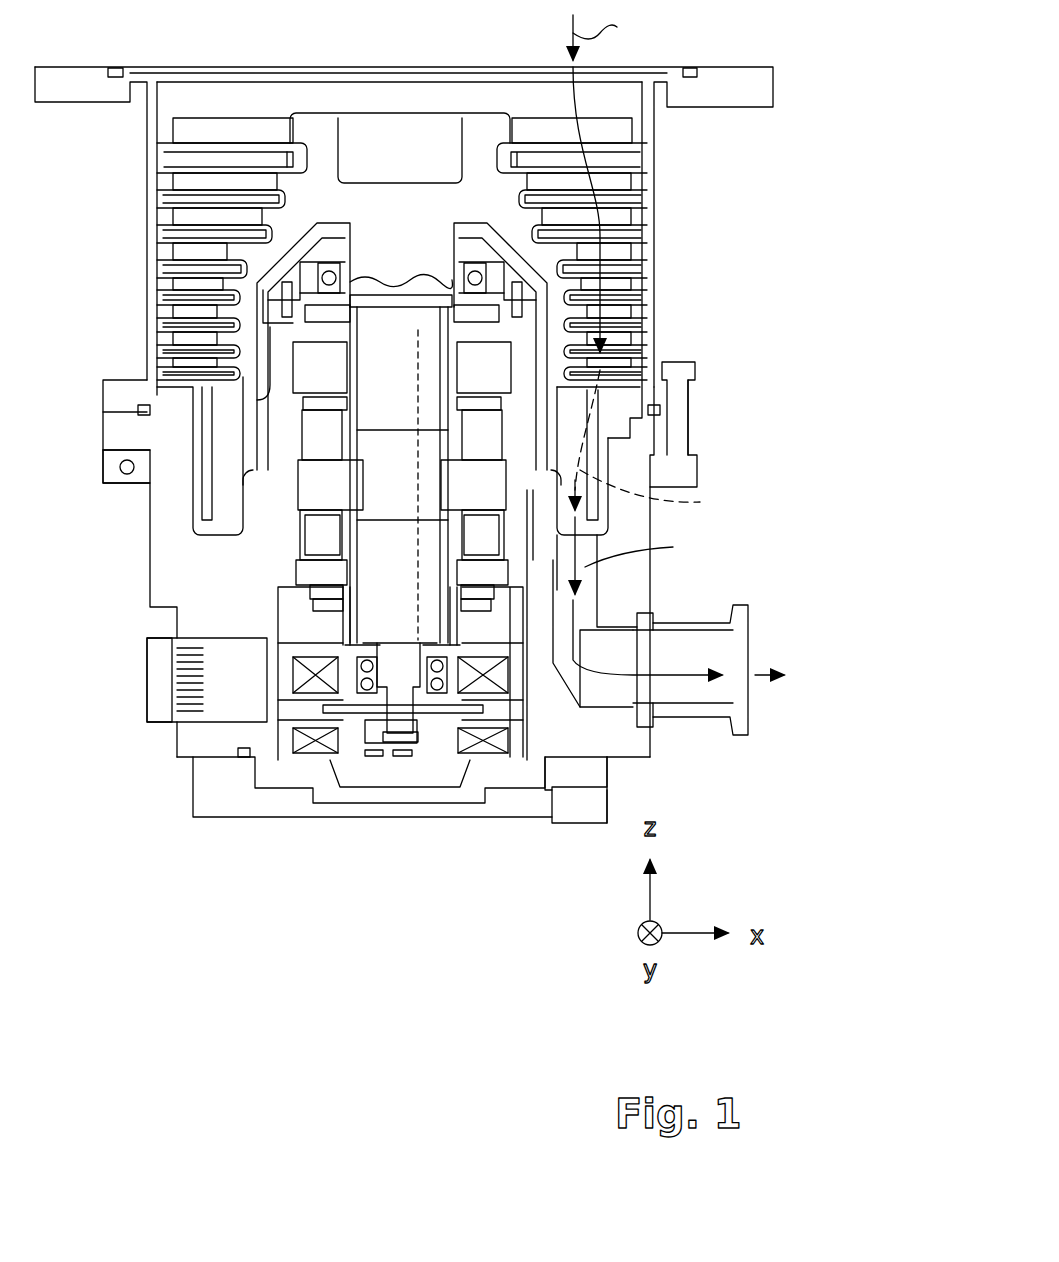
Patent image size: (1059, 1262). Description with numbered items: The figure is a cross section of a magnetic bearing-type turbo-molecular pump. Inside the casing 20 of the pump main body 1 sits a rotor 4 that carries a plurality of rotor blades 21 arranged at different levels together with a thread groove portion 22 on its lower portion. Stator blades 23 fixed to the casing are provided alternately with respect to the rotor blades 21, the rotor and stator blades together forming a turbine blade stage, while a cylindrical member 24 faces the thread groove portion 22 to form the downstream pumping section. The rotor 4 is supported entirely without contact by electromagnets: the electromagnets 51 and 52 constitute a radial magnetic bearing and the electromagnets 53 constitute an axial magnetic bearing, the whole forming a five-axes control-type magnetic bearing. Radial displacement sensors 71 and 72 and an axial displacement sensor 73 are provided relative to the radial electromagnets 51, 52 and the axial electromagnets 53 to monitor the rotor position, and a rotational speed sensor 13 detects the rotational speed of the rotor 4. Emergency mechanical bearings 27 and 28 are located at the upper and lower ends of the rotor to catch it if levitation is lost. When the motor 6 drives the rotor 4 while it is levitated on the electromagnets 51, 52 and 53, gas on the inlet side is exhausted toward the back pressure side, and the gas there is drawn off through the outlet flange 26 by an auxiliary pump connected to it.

The pump main body 1 is at (258, 67).
The rotor 4 is at (322, 125).
The motor 6 is at (310, 492).
The rotational speed sensor 13 is at (365, 760).
The casing 20 is at (404, 445).
The rotor blades 21 is at (180, 128).
The thread groove portion 22 is at (210, 437).
The stator blades 23 is at (165, 158).
The cylindrical member 24 is at (190, 490).
The outlet flange 26 is at (740, 733).
The emergency mechanical bearing 27 is at (450, 282).
The emergency mechanical bearing 28 is at (455, 662).
The radial electromagnet 51 is at (463, 365).
The radial electromagnet 52 is at (500, 595).
The axial electromagnets 53 is at (510, 690).
The radial displacement sensor 71 is at (348, 305).
The radial displacement sensor 72 is at (333, 638).
The axial displacement sensor 73 is at (403, 757).